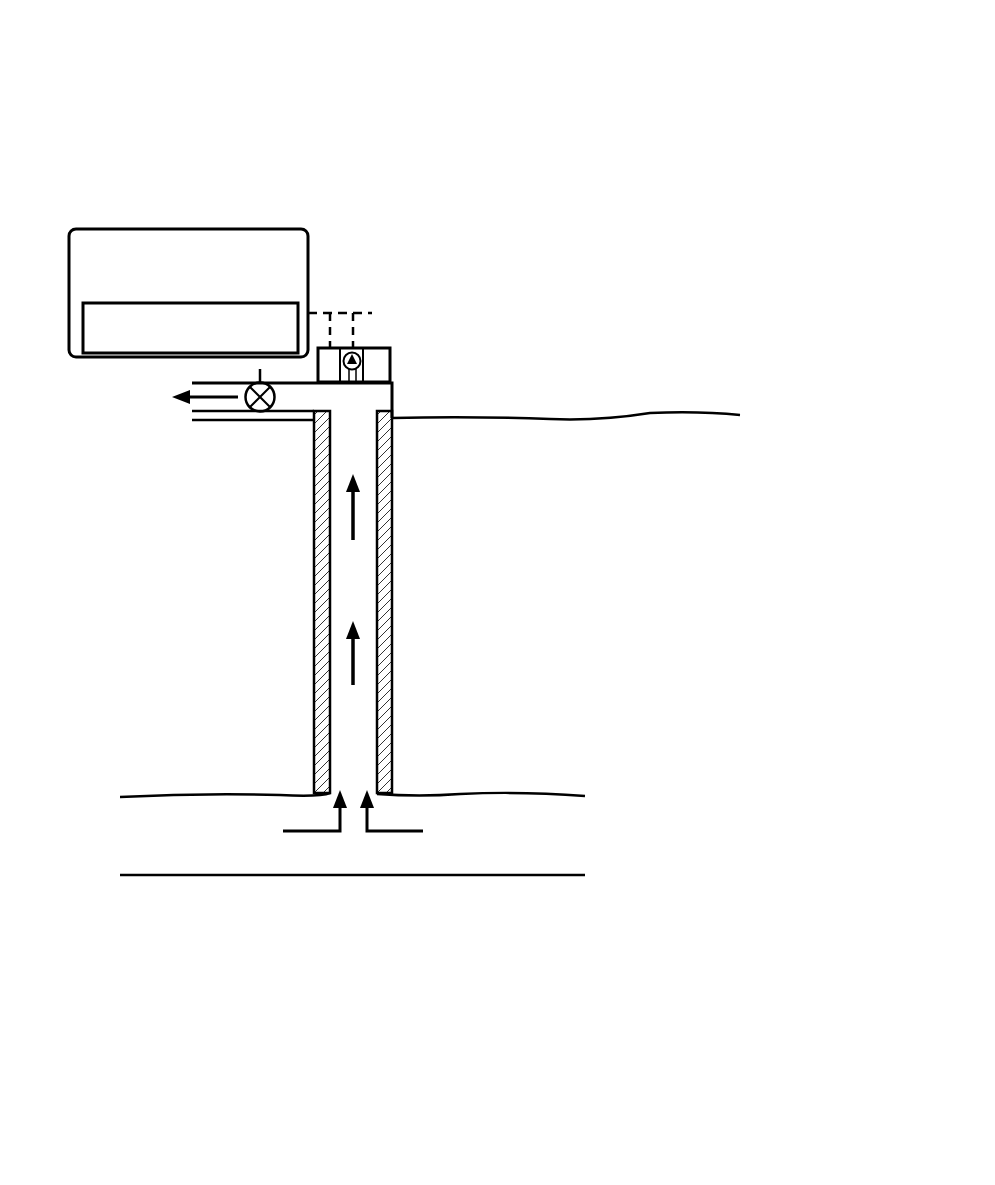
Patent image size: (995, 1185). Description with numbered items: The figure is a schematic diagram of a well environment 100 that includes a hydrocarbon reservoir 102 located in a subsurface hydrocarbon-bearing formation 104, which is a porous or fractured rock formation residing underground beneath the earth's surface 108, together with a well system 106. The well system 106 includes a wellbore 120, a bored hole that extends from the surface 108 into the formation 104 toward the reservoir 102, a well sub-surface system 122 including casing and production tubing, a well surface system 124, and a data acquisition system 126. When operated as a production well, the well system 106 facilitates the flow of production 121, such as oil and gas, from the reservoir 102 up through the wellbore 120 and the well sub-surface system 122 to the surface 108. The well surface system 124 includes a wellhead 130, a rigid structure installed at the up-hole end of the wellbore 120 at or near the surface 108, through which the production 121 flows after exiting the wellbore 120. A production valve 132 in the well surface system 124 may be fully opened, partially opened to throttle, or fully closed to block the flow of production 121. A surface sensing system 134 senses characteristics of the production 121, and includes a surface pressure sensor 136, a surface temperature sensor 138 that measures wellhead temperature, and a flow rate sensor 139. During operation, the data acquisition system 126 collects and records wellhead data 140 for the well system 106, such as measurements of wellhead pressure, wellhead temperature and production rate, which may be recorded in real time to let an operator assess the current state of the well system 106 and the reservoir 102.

The well environment 100 is at (450, 59).
The hydrocarbon reservoir 102 is at (524, 861).
The hydrocarbon-bearing formation 104 is at (550, 701).
The well system 106 is at (158, 195).
The surface 108 is at (564, 430).
The wellbore 120 is at (396, 494).
The production 121 is at (120, 426).
The well sub-surface system 122 is at (297, 636).
The well surface system 124 is at (525, 166).
The data acquisition system 126 is at (128, 228).
The wellhead 130 is at (395, 411).
The production valve 132 is at (258, 413).
The surface sensing system 134 is at (392, 372).
The surface pressure sensor 136 is at (362, 346).
The surface temperature sensor 138 is at (375, 340).
The flow rate sensor 139 is at (333, 312).
The wellhead data 140 is at (142, 302).